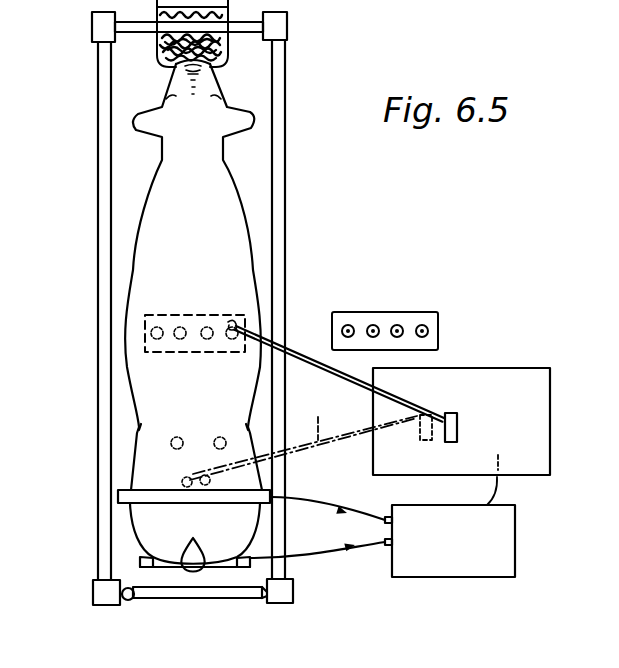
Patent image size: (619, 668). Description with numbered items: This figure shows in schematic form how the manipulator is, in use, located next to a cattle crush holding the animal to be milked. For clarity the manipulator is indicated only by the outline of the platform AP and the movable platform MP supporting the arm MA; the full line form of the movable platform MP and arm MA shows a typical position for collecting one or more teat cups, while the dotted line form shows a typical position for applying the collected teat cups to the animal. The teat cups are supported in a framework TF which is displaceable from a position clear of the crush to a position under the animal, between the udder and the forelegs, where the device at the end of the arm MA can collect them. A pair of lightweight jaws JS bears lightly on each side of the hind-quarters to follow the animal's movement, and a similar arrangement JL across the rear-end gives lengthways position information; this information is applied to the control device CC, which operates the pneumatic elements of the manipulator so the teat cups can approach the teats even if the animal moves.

The framework TF is at (232, 317).
The platform AP is at (512, 368).
The movable platform MP is at (458, 432).
The arm MA is at (336, 371).
The jaws JS is at (142, 493).
The lengthways arrangement JL is at (165, 570).
The control device CC is at (471, 546).